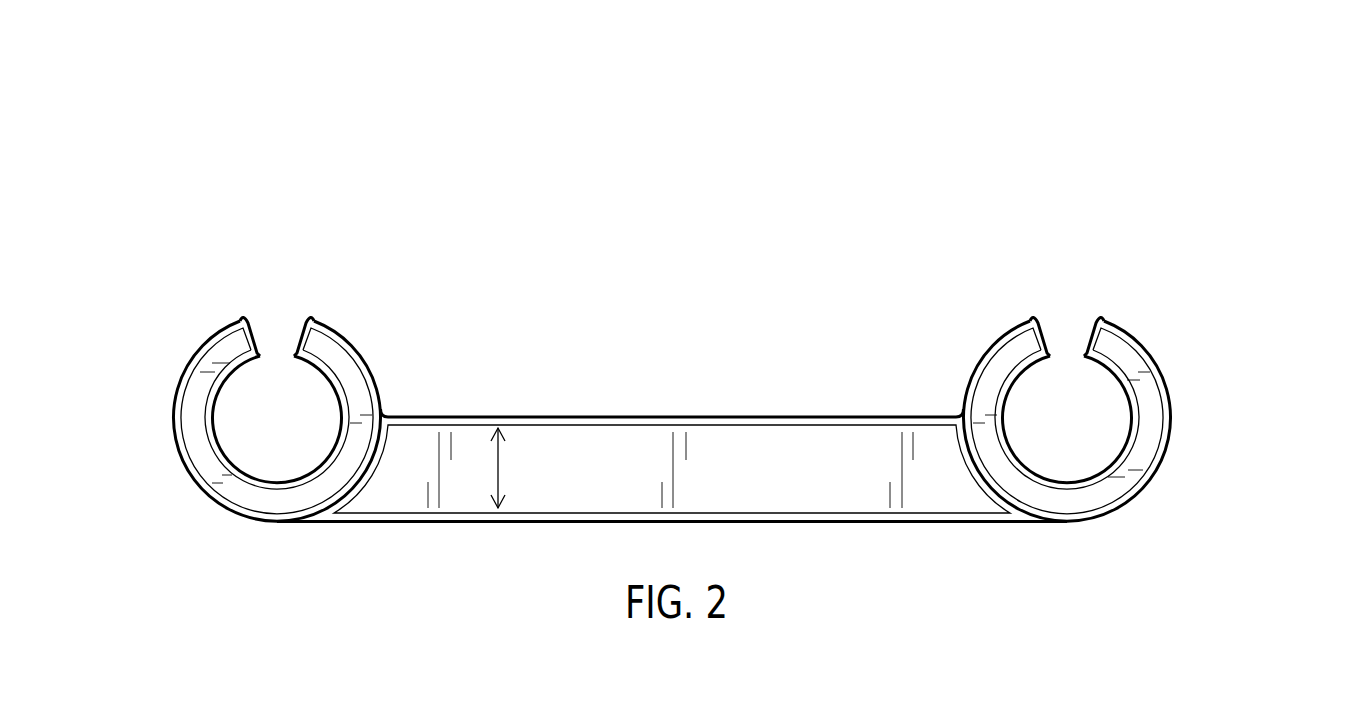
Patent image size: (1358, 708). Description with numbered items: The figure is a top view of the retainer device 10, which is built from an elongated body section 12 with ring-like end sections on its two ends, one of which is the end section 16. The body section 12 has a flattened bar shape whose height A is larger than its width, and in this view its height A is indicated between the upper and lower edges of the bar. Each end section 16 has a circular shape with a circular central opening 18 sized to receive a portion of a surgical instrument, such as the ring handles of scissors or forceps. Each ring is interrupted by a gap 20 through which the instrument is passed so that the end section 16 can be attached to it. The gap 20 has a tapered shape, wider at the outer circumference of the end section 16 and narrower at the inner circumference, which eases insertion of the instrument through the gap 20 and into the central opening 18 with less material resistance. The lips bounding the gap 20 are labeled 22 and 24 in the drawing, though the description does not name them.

The retainer device 10 is at (658, 200).
The elongated body section 12 is at (832, 485).
The end section 16 is at (195, 412).
The central opening 18 is at (273, 435).
The gap 20 is at (280, 345).
The lip 22 is at (310, 332).
The lip 24 is at (243, 325).